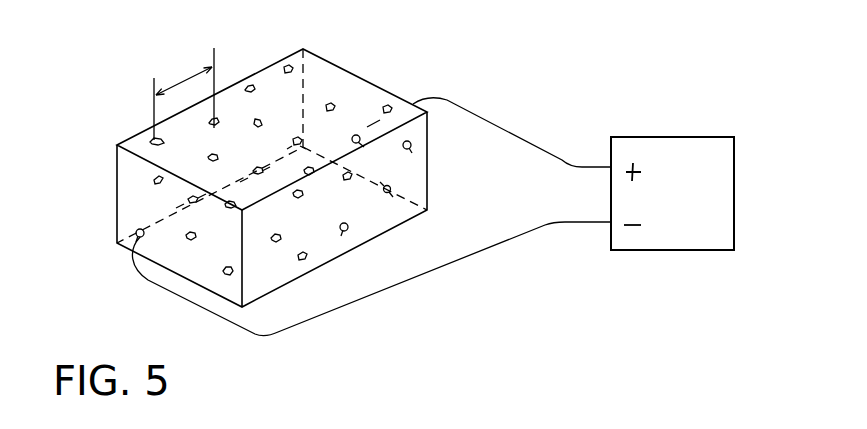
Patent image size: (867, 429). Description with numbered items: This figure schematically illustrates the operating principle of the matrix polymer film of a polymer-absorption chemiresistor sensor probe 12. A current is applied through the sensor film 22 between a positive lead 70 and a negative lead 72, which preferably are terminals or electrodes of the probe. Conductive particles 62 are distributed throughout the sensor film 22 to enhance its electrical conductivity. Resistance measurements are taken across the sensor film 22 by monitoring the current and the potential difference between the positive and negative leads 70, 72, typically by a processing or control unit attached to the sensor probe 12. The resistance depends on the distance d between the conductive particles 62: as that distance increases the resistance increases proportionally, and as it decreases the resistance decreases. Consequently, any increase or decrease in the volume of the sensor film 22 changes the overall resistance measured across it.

The sensor probe 12 is at (470, 86).
The sensor film 22 is at (348, 82).
The conductive particles 62 is at (348, 227).
The positive lead 70 is at (560, 158).
The negative lead 72 is at (412, 281).